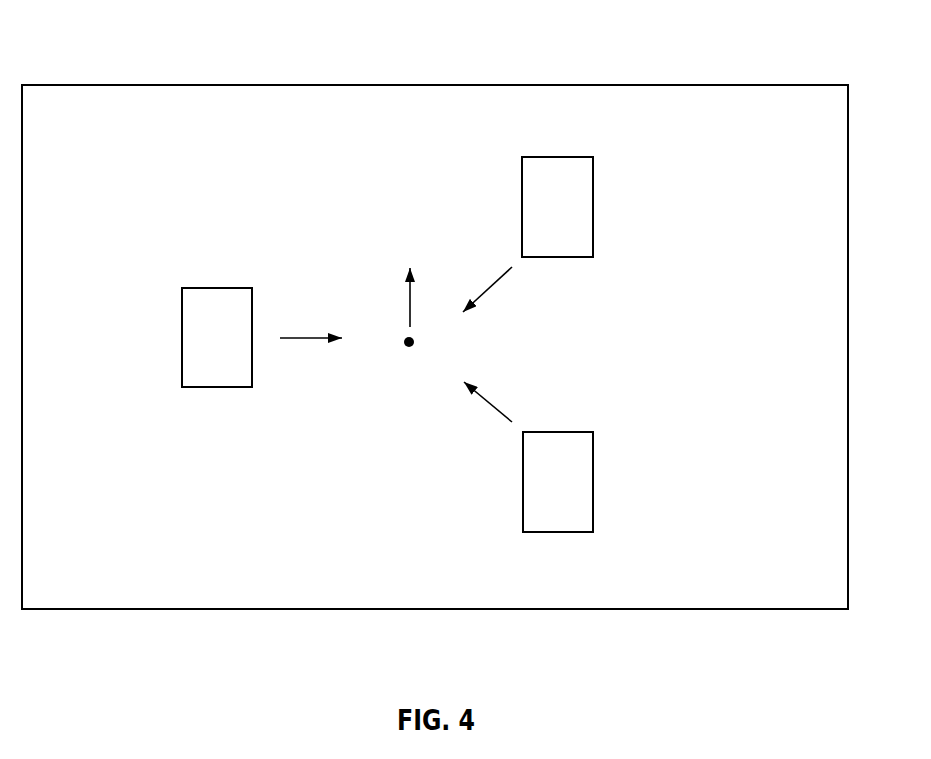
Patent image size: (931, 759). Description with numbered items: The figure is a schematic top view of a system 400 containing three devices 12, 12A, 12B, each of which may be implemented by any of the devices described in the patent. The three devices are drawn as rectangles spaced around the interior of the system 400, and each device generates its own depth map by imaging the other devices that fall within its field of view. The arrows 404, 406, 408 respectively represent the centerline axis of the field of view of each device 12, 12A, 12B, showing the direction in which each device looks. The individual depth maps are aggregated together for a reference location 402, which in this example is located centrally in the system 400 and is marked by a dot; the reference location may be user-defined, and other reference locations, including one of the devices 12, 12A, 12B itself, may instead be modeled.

The system 400 is at (315, 212).
The device 12 is at (192, 287).
The device 12A is at (594, 178).
The device 12B is at (594, 460).
The reference location 402 is at (407, 350).
The arrow 404 is at (302, 340).
The arrow 406 is at (494, 285).
The arrow 408 is at (487, 405).